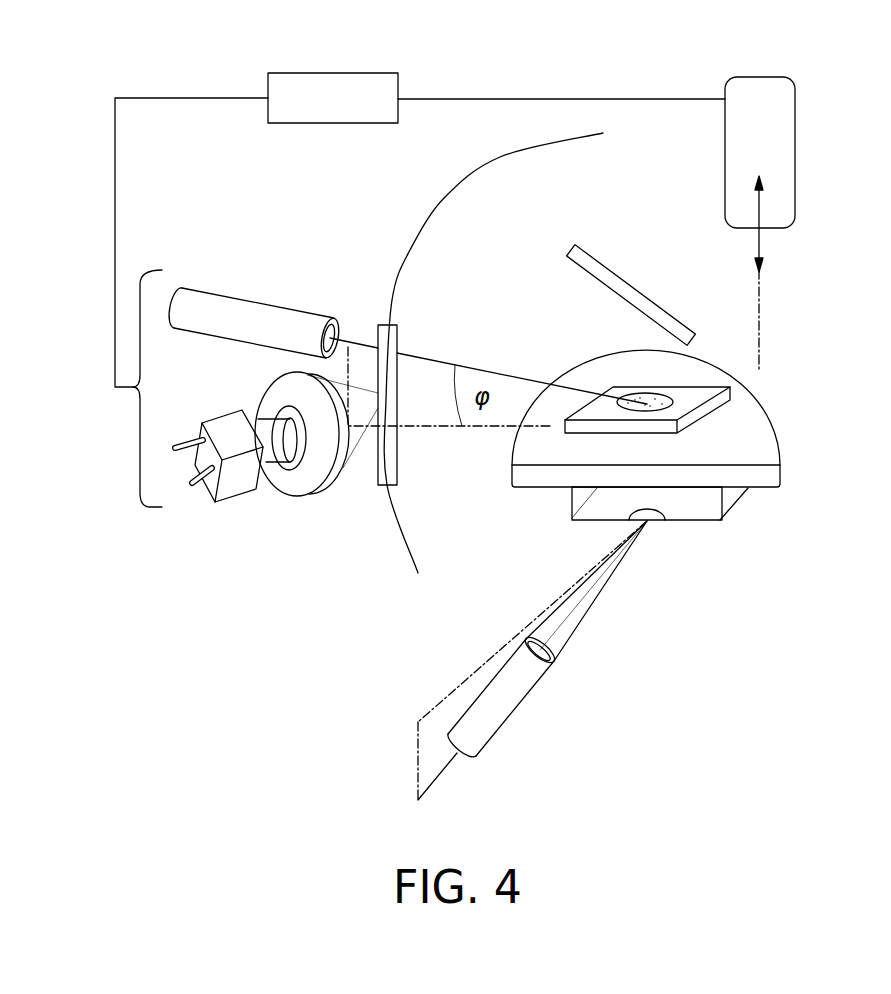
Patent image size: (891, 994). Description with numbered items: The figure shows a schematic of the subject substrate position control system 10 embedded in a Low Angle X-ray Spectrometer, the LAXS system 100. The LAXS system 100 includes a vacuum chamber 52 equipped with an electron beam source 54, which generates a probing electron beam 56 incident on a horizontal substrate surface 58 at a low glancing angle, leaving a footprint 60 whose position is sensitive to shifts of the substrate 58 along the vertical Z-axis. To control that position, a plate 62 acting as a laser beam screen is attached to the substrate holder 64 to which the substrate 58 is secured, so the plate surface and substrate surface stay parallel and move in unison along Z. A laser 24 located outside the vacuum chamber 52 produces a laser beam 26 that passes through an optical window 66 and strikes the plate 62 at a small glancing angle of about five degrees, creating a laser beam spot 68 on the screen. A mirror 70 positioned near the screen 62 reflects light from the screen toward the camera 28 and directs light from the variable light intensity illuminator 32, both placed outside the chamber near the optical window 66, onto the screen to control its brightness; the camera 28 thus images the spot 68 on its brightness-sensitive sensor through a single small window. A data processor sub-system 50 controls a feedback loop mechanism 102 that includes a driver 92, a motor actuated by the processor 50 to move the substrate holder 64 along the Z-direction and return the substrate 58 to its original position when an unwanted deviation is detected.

The subject system 10 is at (372, 232).
The laser 24 is at (255, 290).
The laser beam 26 is at (455, 363).
The camera 28 is at (207, 497).
The variable light intensity illuminator 32 is at (300, 488).
The data processor sub-system 50 is at (268, 80).
The vacuum chamber 52 is at (498, 160).
The electron beam source 54 is at (520, 708).
The probing electron beam 56 is at (582, 600).
The substrate surface 58 is at (733, 503).
The footprint 60 is at (650, 523).
The plate 62 is at (707, 418).
The substrate holder 64 is at (782, 453).
The optical window 66 is at (398, 330).
The laser beam spot 68 is at (645, 397).
The mirror 70 is at (612, 265).
The driver 92 is at (796, 143).
The LAXS system 100 is at (388, 643).
The feedback loop mechanism 102 is at (705, 158).